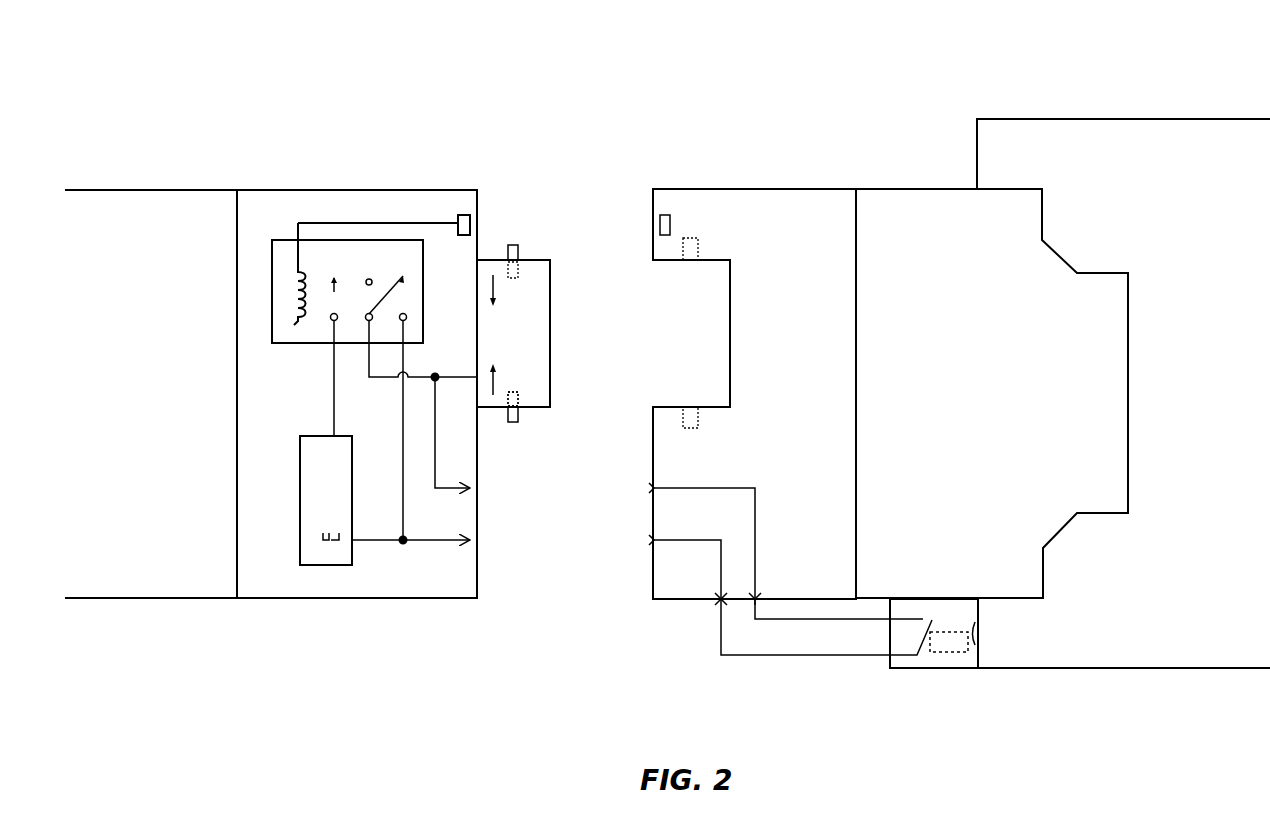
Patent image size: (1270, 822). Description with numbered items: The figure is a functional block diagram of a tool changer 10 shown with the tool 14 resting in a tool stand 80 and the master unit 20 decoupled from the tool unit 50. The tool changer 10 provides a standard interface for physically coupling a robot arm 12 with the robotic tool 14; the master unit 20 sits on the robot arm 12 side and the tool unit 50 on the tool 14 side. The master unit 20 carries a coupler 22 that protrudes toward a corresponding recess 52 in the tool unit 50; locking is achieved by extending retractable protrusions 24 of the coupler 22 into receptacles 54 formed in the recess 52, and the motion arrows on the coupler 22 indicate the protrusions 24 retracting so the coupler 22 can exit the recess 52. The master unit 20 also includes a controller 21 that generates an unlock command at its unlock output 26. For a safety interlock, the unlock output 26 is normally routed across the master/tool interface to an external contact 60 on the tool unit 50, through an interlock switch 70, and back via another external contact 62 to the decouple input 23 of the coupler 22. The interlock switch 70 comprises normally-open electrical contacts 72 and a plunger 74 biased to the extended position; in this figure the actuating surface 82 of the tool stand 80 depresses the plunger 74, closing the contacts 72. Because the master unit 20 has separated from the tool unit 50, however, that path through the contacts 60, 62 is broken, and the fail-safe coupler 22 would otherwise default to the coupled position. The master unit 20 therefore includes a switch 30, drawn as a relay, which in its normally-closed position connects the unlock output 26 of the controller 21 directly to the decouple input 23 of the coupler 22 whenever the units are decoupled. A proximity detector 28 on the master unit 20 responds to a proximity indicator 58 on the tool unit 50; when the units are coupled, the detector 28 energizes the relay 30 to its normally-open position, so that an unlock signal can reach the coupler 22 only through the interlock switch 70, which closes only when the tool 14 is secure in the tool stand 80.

The tool changer 10 is at (800, 78).
The robot arm 12 is at (224, 190).
The robotic tool 14 is at (960, 188).
The master unit 20 is at (452, 190).
The controller 21 is at (321, 435).
The coupler 22 is at (538, 260).
The decouple input 23 is at (467, 376).
The retractable protrusions 24 is at (518, 398).
The unlock output 26 is at (380, 543).
The proximity detector 28 is at (457, 221).
The switch (relay) 30 is at (288, 238).
The tool unit 50 is at (672, 188).
The recess 52 is at (667, 345).
The receptacles 54 is at (695, 428).
The proximity indicator 58 is at (670, 222).
The external contact 60 is at (716, 600).
The external contact 62 is at (762, 597).
The interlock switch 70 is at (962, 668).
The electrical contacts 72 is at (942, 614).
The plunger 74 is at (937, 652).
The tool stand 80 is at (1207, 119).
The actuating surface 82 is at (975, 645).